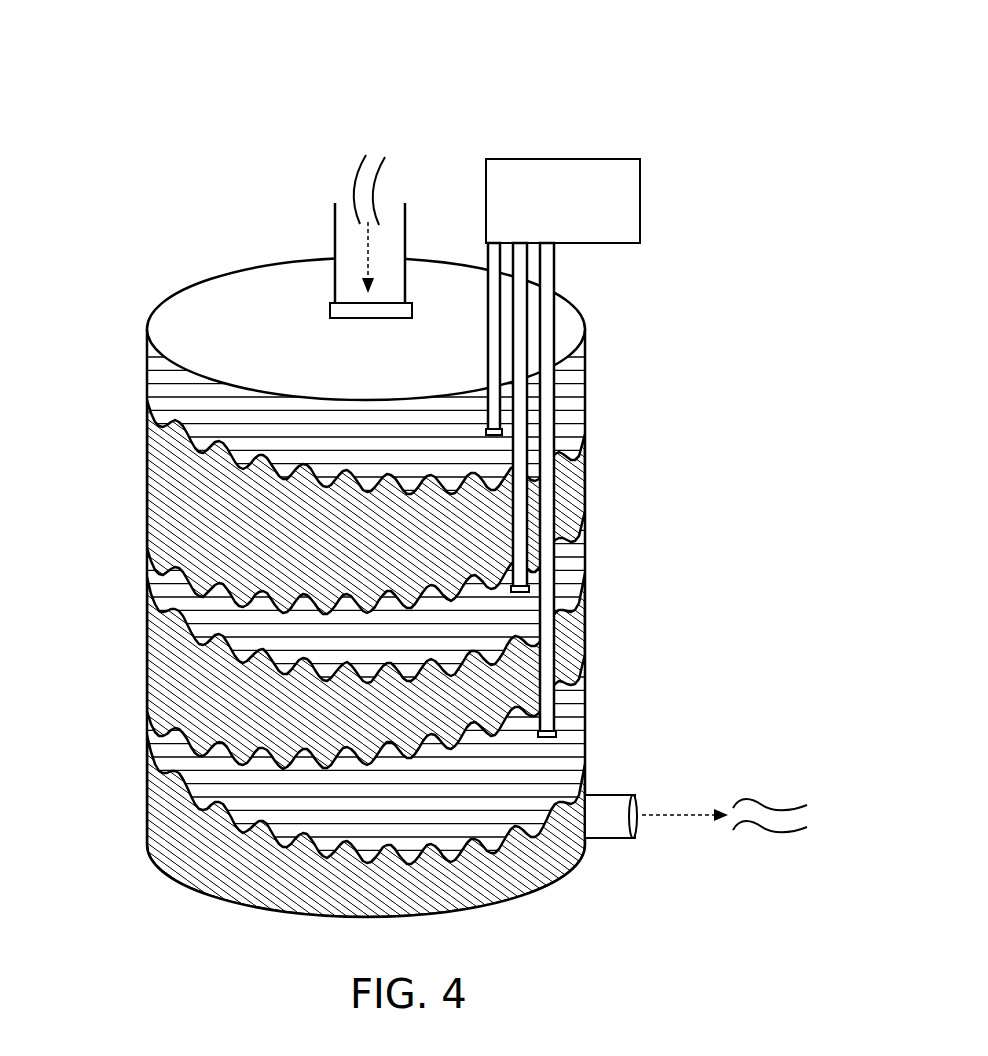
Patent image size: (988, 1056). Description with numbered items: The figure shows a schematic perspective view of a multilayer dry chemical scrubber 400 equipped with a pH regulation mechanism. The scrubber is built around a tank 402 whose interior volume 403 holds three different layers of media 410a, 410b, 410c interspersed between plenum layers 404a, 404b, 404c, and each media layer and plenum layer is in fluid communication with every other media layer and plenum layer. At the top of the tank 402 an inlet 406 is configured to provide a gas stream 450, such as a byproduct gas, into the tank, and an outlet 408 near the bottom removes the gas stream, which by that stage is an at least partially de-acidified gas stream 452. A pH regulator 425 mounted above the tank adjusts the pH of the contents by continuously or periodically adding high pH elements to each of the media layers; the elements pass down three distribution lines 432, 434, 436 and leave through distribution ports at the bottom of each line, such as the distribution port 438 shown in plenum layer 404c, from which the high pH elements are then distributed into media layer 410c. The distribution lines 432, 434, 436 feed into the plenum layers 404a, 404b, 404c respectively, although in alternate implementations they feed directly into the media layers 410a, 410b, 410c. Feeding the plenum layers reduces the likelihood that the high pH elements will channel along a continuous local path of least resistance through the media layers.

The dry chemical scrubber 400 is at (139, 100).
The tank 402 is at (200, 283).
The interior volume 403 is at (351, 623).
The plenum layer 404a is at (586, 407).
The plenum layer 404b is at (586, 527).
The plenum layer 404c is at (586, 705).
The inlet 406 is at (335, 238).
The outlet 408 is at (640, 805).
The media layer 410a is at (586, 462).
The media layer 410b is at (586, 605).
The media layer 410c is at (586, 778).
The pH regulator 425 is at (563, 201).
The distribution line 432 is at (683, 475).
The distribution line 434 is at (527, 308).
The distribution line 436 is at (500, 350).
The distribution port 438 is at (556, 735).
The gas stream 450 is at (405, 158).
The de-acidified gas stream 452 is at (773, 852).